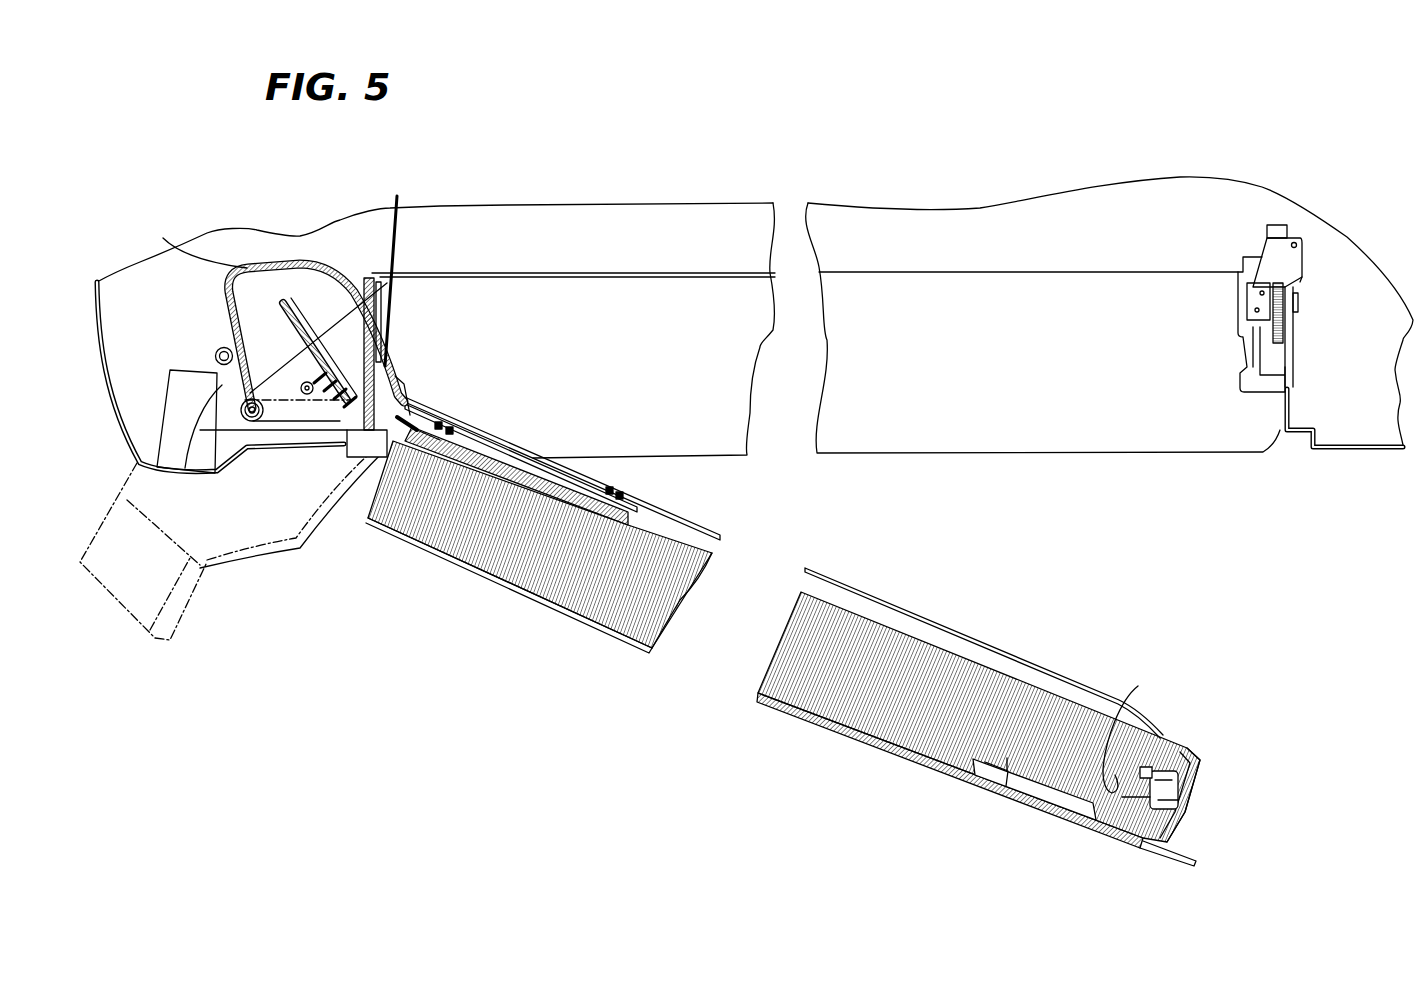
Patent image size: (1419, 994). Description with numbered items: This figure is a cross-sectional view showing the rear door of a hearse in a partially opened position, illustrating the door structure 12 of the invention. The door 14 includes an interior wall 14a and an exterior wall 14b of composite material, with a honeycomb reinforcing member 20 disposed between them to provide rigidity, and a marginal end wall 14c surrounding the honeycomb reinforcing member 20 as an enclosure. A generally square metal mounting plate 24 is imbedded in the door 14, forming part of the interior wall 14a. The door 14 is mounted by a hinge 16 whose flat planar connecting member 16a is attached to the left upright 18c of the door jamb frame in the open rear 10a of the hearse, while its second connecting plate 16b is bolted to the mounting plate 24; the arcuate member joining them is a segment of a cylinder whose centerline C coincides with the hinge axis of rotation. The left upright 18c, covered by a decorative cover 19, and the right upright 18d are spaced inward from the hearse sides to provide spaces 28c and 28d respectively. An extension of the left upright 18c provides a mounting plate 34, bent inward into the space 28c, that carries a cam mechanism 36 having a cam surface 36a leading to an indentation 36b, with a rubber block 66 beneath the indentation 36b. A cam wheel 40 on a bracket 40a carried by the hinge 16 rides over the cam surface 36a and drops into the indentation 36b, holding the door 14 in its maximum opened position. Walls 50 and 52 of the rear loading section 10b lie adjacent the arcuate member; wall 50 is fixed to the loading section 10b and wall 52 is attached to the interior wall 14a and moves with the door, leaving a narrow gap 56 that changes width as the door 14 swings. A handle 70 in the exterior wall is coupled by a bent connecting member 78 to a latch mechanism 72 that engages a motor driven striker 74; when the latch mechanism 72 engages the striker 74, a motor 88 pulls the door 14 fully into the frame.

The open rear 10a is at (1070, 470).
The rear loading section 10b is at (585, 330).
The door structure 12 is at (760, 605).
The door 14 is at (1032, 729).
The interior wall 14a is at (667, 528).
The exterior wall 14b is at (428, 558).
The marginal end wall 14c is at (298, 535).
The hinge 16 is at (325, 342).
The connecting member 16a is at (228, 327).
The connecting plate 16b is at (487, 443).
The left upright 18c is at (380, 268).
The right upright 18d is at (1280, 430).
The decorative cover 19 is at (418, 410).
The honeycomb reinforcing member 20 is at (648, 622).
The mounting plate 24 is at (492, 507).
The space 28c is at (147, 380).
The space 28d is at (1320, 328).
The mounting plate 34 is at (276, 310).
The cam mechanism 36 is at (262, 337).
The cam surface 36a is at (305, 385).
The indentation 36b is at (303, 395).
The cam wheel 40 is at (213, 349).
The bracket 40a is at (193, 470).
The wall 50 is at (400, 200).
The wall 52 is at (470, 425).
The gap 56 is at (403, 375).
The rubber block 66 is at (330, 322).
The handle 70 is at (1050, 797).
The latch mechanism 72 is at (1200, 808).
The striker 74 is at (1305, 365).
The bent connecting member 78 is at (1127, 724).
The motor 88 is at (1266, 236).
The centerline C is at (250, 445).